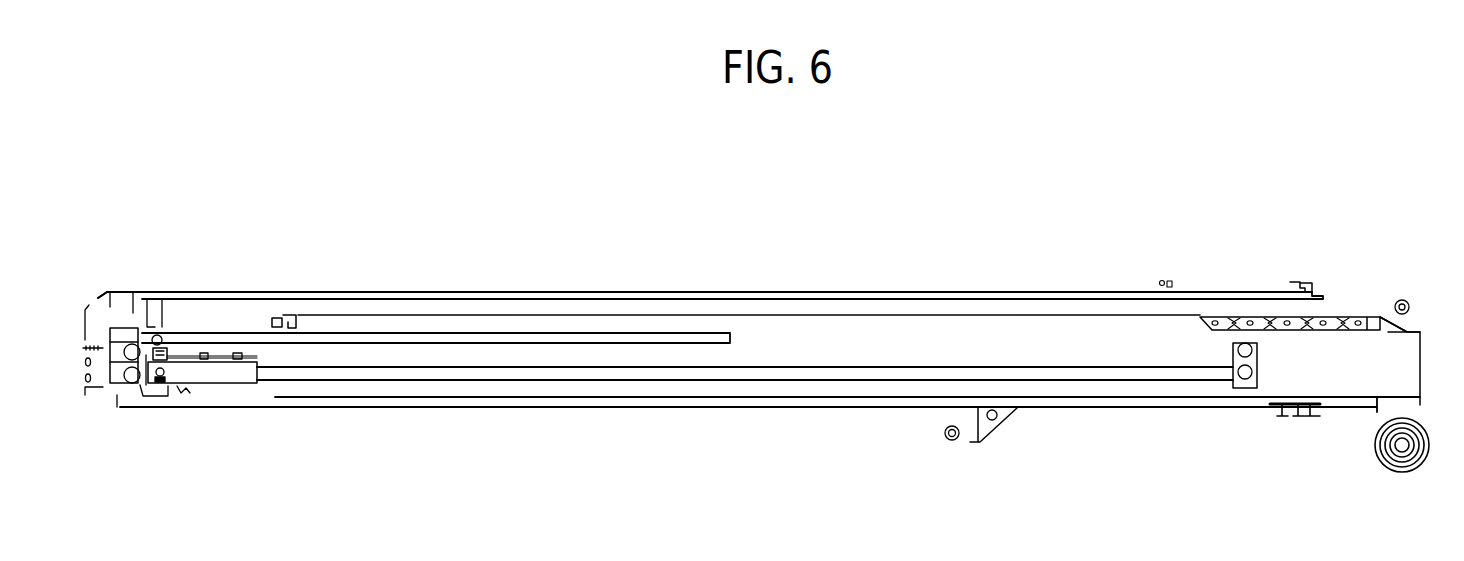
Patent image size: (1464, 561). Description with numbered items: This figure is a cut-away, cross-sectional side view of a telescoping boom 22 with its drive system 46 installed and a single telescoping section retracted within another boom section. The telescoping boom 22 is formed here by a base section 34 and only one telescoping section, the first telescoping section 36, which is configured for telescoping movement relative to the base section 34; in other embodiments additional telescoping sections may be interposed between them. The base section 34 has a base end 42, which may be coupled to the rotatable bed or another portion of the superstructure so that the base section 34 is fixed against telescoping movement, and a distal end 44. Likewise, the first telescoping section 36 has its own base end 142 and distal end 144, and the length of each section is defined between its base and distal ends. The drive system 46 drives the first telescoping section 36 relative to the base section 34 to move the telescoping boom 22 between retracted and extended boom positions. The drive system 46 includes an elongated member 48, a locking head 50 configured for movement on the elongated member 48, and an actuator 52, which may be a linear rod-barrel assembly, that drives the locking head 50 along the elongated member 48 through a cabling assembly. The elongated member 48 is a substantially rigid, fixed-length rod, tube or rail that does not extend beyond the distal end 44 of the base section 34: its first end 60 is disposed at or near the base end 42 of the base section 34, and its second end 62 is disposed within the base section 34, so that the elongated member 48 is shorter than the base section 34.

The telescoping boom 22 is at (763, 326).
The base section 34 is at (440, 291).
The first telescoping section 36 is at (882, 330).
The base end 42 is at (123, 292).
The distal end 44 is at (1308, 282).
The drive system 46 is at (1083, 347).
The elongated member 48 is at (574, 380).
The locking head 50 is at (222, 385).
The actuator 52 is at (612, 337).
The first end 60 is at (142, 405).
The second end 62 is at (1245, 372).
The base end 142 is at (305, 331).
The distal end 144 is at (1408, 332).